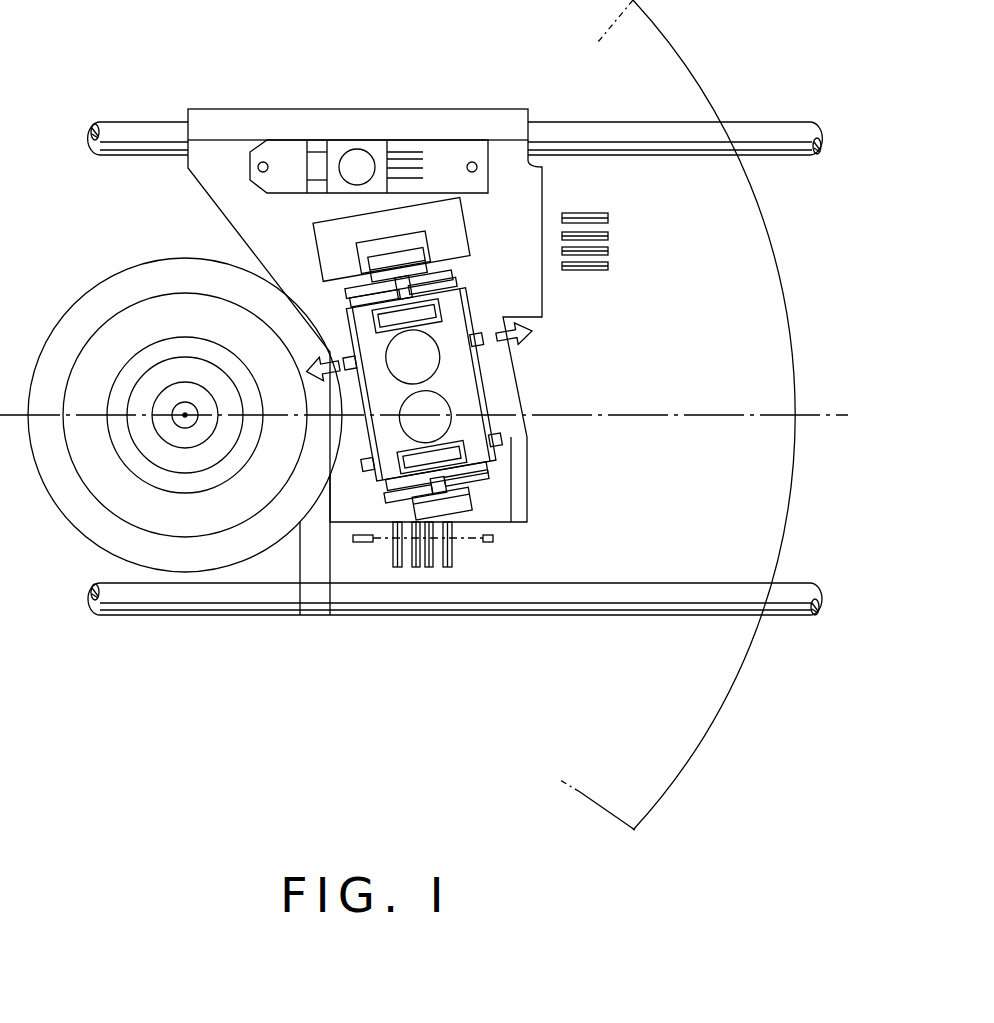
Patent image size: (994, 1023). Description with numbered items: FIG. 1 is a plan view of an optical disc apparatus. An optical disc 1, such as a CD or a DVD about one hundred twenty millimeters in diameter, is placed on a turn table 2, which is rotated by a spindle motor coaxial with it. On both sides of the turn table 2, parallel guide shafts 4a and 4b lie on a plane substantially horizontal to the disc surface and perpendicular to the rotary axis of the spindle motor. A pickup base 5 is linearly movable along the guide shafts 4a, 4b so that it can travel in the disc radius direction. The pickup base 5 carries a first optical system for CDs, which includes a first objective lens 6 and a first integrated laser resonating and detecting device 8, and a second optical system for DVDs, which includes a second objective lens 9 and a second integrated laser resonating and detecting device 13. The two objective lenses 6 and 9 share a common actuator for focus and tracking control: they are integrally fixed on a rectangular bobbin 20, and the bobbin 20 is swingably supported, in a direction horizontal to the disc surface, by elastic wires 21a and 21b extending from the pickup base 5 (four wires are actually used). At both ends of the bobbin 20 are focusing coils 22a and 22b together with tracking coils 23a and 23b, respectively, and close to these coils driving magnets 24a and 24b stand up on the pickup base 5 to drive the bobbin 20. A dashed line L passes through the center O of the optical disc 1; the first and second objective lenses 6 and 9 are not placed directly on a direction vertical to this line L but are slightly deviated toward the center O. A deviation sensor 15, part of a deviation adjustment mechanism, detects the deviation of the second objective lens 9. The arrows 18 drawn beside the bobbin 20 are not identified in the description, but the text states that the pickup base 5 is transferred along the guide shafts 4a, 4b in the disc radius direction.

The optical disc 1 is at (718, 723).
The turn table 2 is at (85, 533).
The guide shaft 4a is at (633, 135).
The guide shaft 4b is at (630, 605).
The pickup base 5 is at (232, 190).
The first objective lens 6 is at (437, 425).
The first integrated laser resonating and detecting device 8 is at (453, 557).
The second objective lens 9 is at (423, 358).
The second integrated laser resonating and detecting device 13 is at (588, 213).
The deviation sensor 15 is at (357, 149).
The direction of movement 18 is at (497, 340).
The rectangular bobbin 20 is at (466, 388).
The elastic wire 21a is at (334, 304).
The elastic wire 21b is at (481, 293).
The focusing coil 22a is at (440, 309).
The focusing coil 22b is at (389, 468).
The tracking coil 23a is at (470, 283).
The tracking coil 23b is at (396, 478).
The driving magnet 24a is at (400, 268).
The driving magnet 24b is at (465, 492).
The center of the optical disc O is at (185, 412).
The dashed line L is at (433, 416).